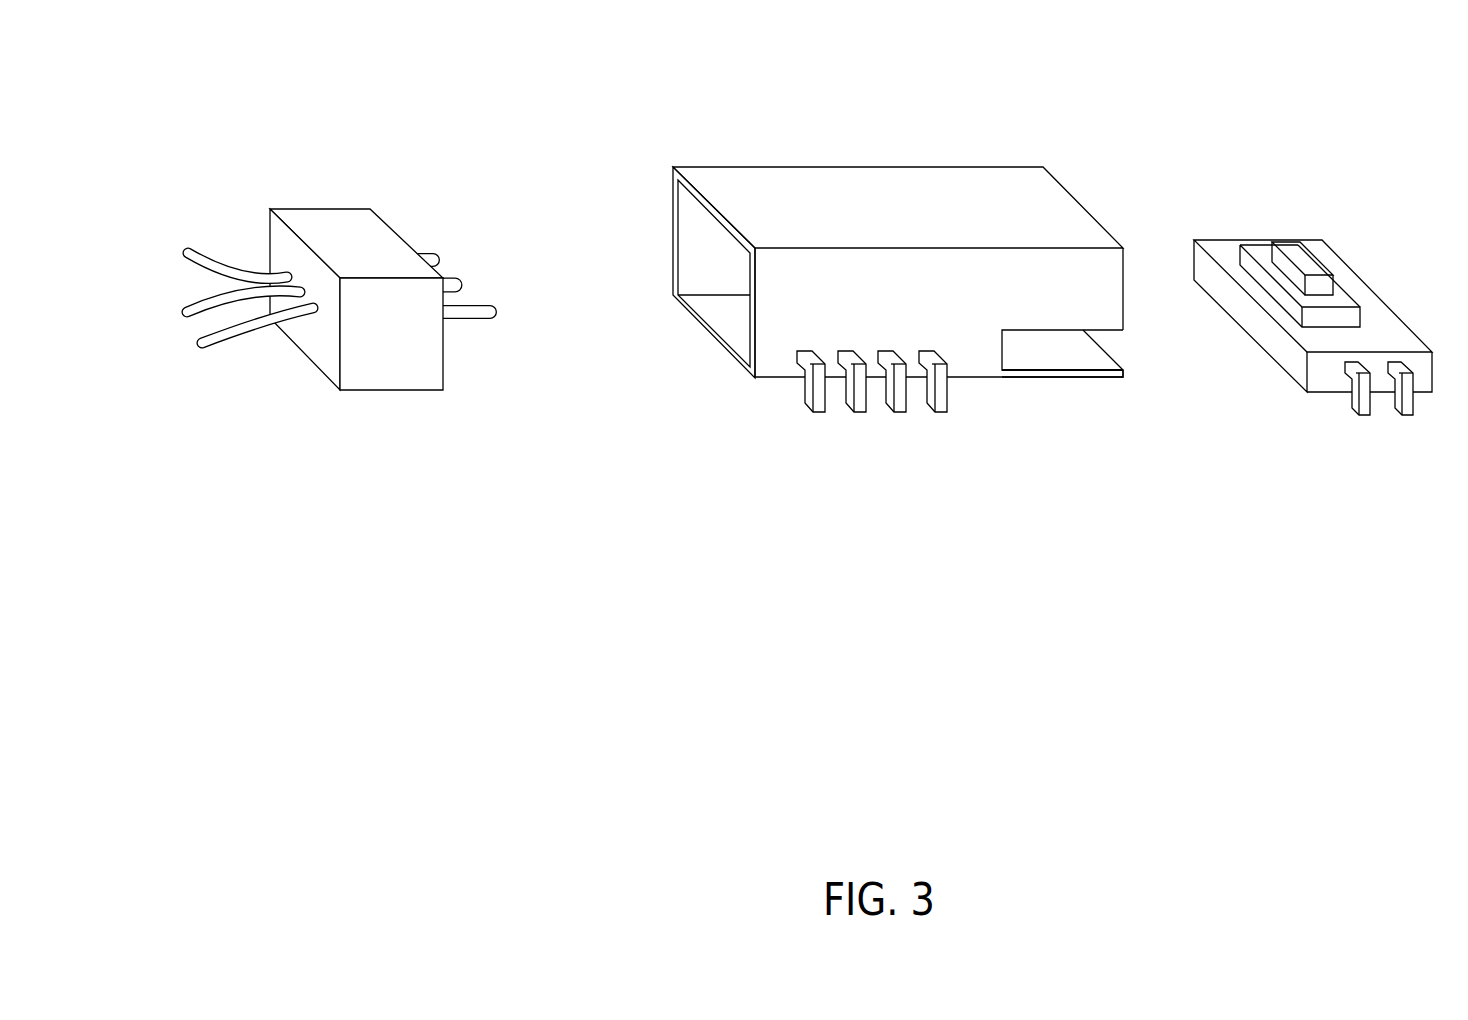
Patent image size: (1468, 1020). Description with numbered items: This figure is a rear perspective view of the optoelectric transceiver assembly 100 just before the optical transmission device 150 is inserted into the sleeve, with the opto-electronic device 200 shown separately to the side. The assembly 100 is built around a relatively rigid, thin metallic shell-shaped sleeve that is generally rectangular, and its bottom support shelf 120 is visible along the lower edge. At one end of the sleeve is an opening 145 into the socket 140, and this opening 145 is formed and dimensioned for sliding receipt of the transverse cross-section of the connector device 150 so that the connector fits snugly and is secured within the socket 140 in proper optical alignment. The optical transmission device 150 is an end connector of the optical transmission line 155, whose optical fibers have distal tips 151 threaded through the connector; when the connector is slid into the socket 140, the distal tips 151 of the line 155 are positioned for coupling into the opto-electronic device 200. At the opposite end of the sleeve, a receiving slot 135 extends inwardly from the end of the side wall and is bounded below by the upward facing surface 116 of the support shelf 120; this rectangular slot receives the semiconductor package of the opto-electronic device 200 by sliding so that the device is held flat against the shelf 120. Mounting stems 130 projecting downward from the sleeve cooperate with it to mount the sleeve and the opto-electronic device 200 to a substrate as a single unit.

The optoelectric transceiver assembly 100 is at (970, 135).
The upward facing surface 116 is at (1098, 360).
The bottom support shelf 120 is at (1072, 378).
The mounting stems 130 is at (860, 413).
The receiving slot 135 is at (1053, 360).
The socket 140 is at (693, 253).
The opening 145 is at (727, 352).
The optical transmission device 150 is at (358, 208).
The distal tips 151 is at (470, 318).
The optical transmission line 155 is at (210, 257).
The opto-electronic device 200 is at (1387, 452).